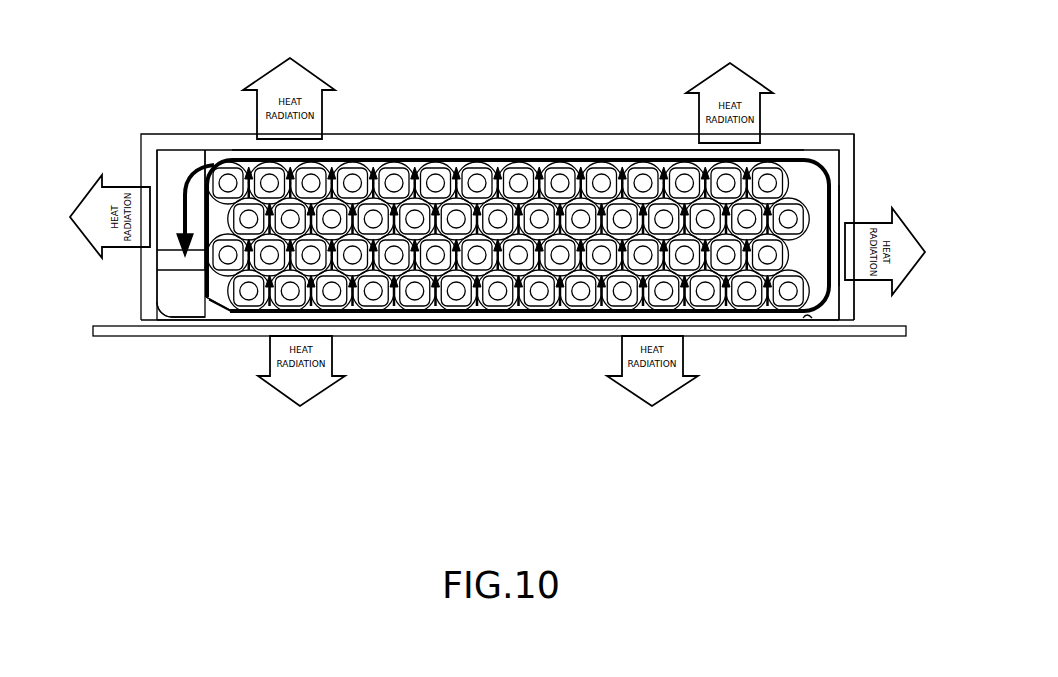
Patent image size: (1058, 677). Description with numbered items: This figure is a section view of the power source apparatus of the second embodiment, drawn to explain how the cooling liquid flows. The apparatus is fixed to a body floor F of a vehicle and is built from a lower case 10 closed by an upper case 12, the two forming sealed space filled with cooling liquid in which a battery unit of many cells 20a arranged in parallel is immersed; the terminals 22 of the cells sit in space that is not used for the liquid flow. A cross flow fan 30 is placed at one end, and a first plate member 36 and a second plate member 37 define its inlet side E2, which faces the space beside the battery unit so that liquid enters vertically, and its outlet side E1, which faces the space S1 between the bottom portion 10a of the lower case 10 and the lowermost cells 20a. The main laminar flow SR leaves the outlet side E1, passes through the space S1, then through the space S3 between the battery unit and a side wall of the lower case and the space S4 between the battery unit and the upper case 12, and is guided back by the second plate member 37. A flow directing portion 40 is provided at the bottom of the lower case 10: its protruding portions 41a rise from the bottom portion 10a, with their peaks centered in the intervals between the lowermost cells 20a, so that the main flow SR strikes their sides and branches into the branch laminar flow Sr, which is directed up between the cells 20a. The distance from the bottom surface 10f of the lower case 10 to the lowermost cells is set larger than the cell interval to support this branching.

The lower case 10 is at (860, 175).
The bottom portion of the lower case 10a is at (535, 321).
The bottom surface of the lower case 10f is at (807, 316).
The upper case 12 is at (822, 125).
The cells 20a is at (613, 165).
The terminals 22 is at (589, 170).
The cross flow fan 30 is at (178, 310).
The first plate member 36 is at (203, 314).
The second plate member 37 is at (194, 178).
The flow directing portion 40 is at (353, 315).
The protruding portions 41a is at (763, 313).
The outlet side E1 is at (224, 311).
The inlet side E2 is at (166, 256).
The body floor F is at (865, 333).
The space S1 is at (172, 182).
The space S3 is at (833, 195).
The space S4 is at (461, 157).
The main laminar flow SR is at (383, 150).
The branch laminar flow Sr is at (403, 313).